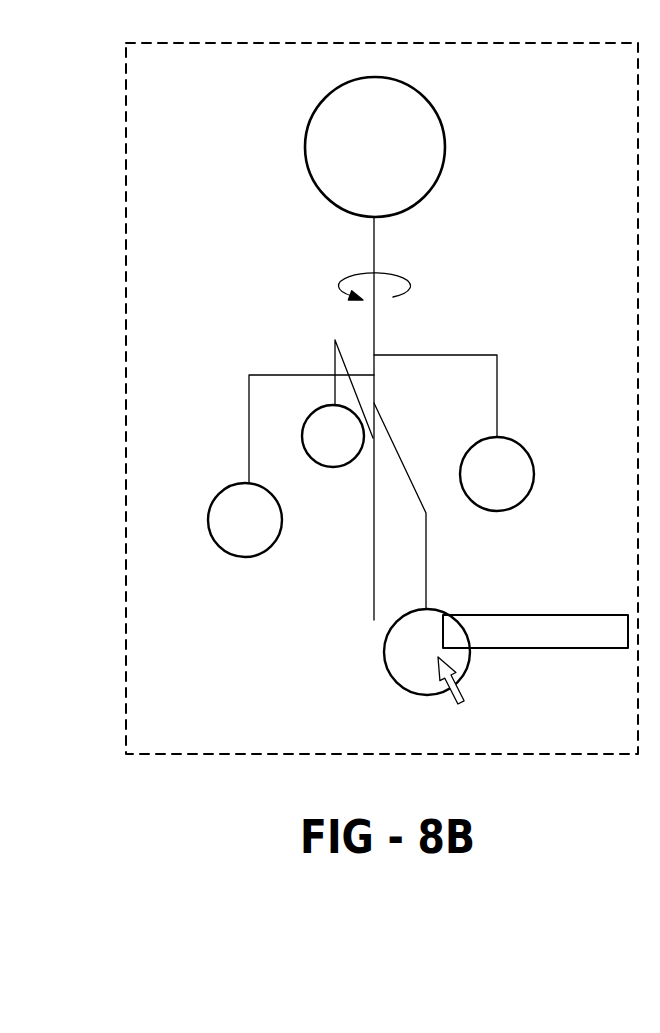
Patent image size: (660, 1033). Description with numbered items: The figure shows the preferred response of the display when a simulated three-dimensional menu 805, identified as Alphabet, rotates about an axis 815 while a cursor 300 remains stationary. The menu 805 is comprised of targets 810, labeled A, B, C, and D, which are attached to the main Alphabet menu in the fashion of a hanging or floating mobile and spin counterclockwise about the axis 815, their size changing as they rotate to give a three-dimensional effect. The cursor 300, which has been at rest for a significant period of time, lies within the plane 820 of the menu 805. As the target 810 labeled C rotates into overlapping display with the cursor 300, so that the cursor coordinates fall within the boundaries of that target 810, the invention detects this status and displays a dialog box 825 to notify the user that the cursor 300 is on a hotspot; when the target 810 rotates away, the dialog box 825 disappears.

The menu 805 is at (445, 147).
The targets 810 is at (533, 474).
The axis 815 is at (370, 250).
The plane 820 is at (542, 754).
The dialog box 825 is at (513, 615).
The cursor 300 is at (445, 697).